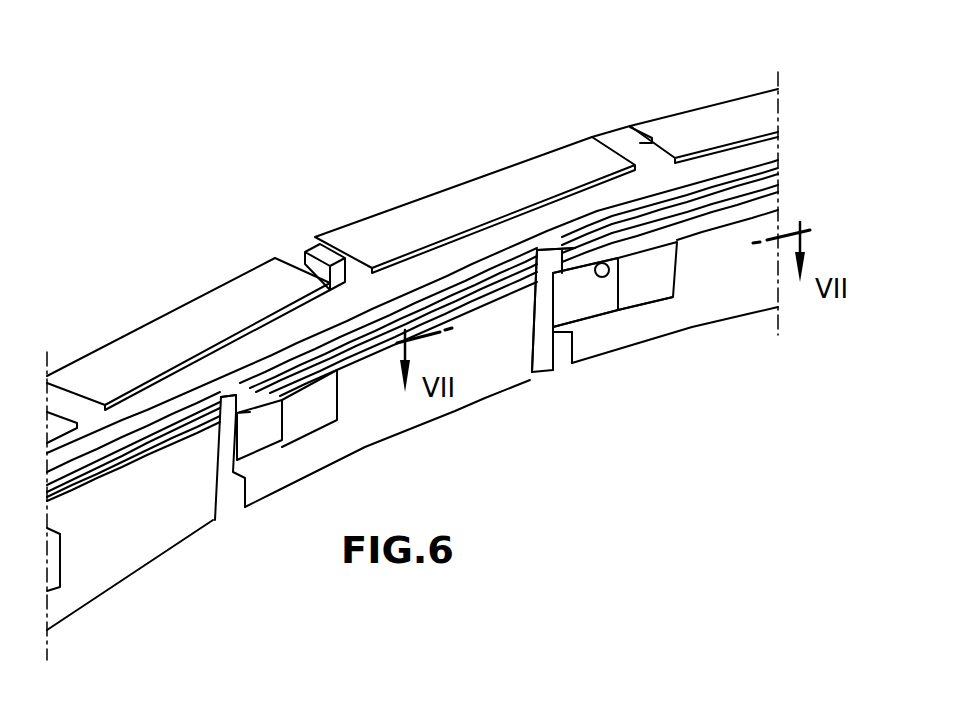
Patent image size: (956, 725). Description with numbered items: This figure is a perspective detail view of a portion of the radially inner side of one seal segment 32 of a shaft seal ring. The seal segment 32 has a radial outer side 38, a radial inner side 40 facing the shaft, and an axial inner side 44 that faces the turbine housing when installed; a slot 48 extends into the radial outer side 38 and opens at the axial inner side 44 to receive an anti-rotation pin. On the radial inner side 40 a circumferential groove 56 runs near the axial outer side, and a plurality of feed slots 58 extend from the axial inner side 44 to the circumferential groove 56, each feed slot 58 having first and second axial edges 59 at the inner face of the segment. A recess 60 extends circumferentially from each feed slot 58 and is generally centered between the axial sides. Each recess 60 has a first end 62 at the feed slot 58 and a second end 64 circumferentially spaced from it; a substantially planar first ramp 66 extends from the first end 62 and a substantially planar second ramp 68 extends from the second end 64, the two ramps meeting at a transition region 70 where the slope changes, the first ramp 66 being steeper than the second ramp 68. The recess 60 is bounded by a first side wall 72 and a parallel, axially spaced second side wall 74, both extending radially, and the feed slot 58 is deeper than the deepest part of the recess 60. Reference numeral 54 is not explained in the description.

The seal segment 32 is at (284, 167).
The radial outer side 38 is at (127, 330).
The radial inner side 40 is at (748, 290).
The axial inner side 44 is at (405, 223).
The slot 48 is at (301, 262).
The third magnet block 54 is at (718, 168).
The circumferential groove 56 is at (603, 245).
The feed slot 58 is at (232, 402).
The axial edge 59 is at (532, 285).
The recess 60 is at (237, 490).
The first end 62 is at (548, 307).
The second end 64 is at (673, 270).
The first ramp 66 is at (618, 310).
The second ramp 68 is at (660, 282).
The transition region 70 is at (622, 277).
The first side wall 72 is at (596, 298).
The second side wall 74 is at (590, 250).